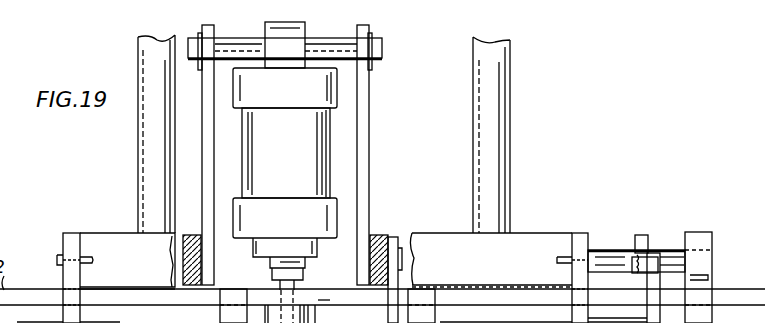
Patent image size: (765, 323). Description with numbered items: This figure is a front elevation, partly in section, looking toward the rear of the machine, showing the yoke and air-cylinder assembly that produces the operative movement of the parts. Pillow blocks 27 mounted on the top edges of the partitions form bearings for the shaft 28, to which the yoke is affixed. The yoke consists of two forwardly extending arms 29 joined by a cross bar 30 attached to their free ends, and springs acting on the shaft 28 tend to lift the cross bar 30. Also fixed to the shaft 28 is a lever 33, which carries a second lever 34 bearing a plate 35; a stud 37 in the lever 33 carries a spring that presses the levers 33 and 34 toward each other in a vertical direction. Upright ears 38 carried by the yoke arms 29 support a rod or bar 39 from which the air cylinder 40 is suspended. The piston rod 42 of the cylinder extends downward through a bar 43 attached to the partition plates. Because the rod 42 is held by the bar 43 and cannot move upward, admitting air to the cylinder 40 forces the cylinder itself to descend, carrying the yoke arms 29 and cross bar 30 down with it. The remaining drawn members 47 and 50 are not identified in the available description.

The pillow block 27 is at (690, 232).
The shaft 28 is at (600, 250).
The yoke arm 29 is at (192, 235).
The cross bar 30 is at (110, 242).
The lever 33 is at (645, 235).
The second lever 34 is at (648, 318).
The plate 35 is at (634, 272).
The stud 37 is at (640, 255).
The upright ear 38 is at (203, 142).
The rod or bar 39 is at (331, 44).
The air cylinder 40 is at (285, 174).
The piston rod 42 is at (280, 287).
The bar 43 is at (340, 298).
The guide tube 47 is at (146, 167).
The base plate 50 is at (530, 300).